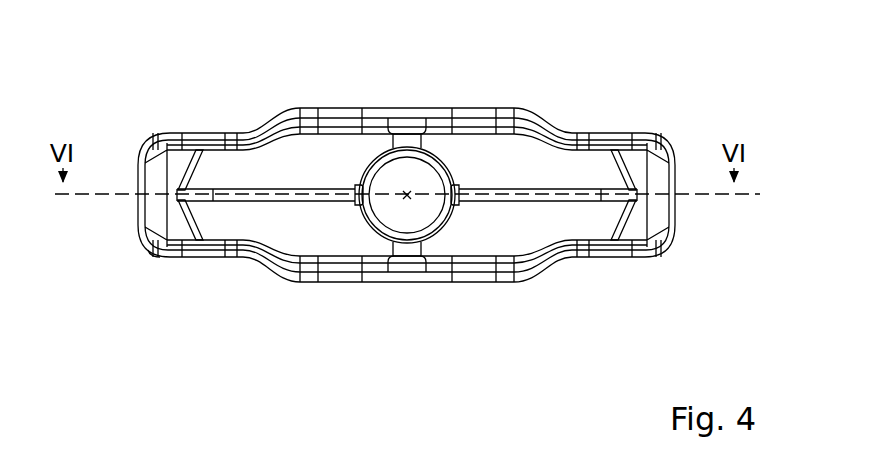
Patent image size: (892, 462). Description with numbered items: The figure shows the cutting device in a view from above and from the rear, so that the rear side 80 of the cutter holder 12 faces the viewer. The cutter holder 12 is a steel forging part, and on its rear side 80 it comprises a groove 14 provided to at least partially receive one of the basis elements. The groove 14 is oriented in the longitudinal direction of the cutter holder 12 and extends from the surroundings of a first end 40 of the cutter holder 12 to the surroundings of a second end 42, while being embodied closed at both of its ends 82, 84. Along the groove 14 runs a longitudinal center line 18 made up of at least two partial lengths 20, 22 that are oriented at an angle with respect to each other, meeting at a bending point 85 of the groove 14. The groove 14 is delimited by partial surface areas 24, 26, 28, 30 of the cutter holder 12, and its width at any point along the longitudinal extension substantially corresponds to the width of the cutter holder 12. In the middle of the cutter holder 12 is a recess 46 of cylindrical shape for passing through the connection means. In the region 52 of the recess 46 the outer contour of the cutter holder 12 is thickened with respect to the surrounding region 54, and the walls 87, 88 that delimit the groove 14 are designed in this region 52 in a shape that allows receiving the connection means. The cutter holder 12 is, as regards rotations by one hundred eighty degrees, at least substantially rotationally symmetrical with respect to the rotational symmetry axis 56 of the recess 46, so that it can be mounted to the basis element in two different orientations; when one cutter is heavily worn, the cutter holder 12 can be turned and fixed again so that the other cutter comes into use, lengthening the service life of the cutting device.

The cutter holder 12 is at (478, 112).
The groove 14 is at (556, 252).
The longitudinal center line 18 is at (262, 193).
The partial length 20 is at (233, 195).
The partial length 22 is at (563, 193).
The partial surface area 24 is at (487, 246).
The partial surface area 26 is at (539, 152).
The partial surface area 28 is at (315, 238).
The partial surface area 30 is at (246, 158).
The first end 40 is at (676, 145).
The second end 42 is at (138, 151).
The recess 46 is at (399, 182).
The region of the recess 52 is at (394, 283).
The surrounding region 54 is at (203, 263).
The rotational symmetry axis 56 is at (408, 203).
The rear side 80 is at (324, 168).
The end of the groove 82 is at (596, 220).
The end of the groove 84 is at (201, 210).
The bending point 85 is at (436, 150).
The wall 87 is at (515, 112).
The wall 88 is at (526, 228).